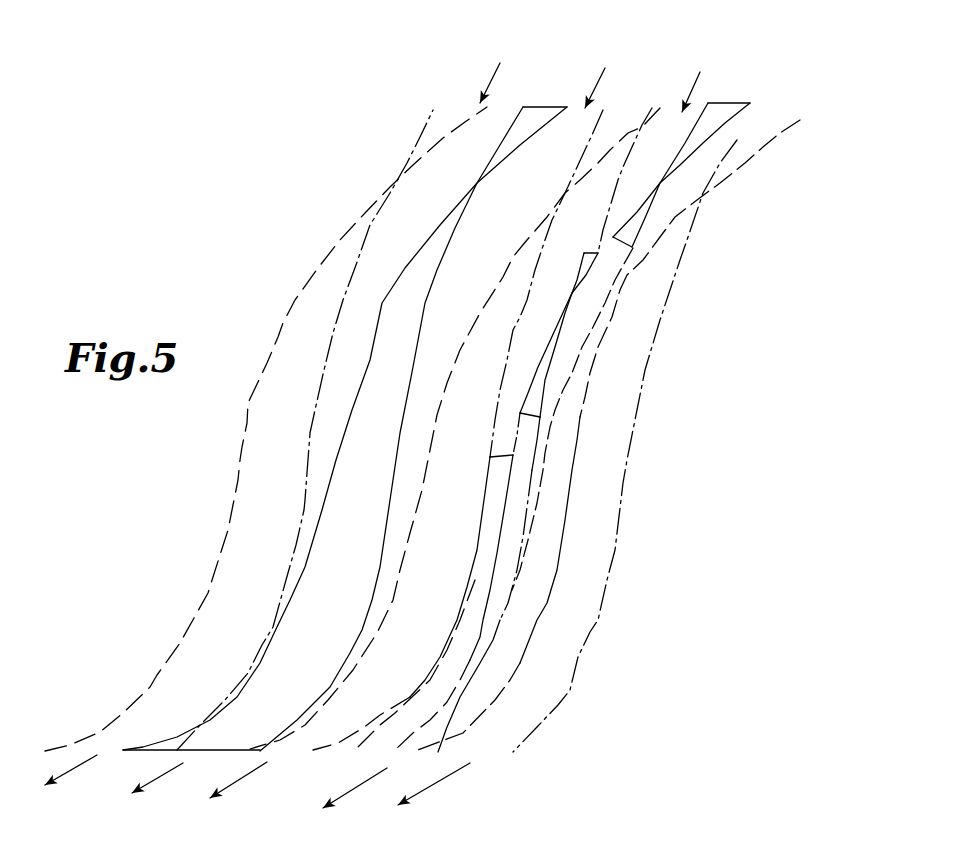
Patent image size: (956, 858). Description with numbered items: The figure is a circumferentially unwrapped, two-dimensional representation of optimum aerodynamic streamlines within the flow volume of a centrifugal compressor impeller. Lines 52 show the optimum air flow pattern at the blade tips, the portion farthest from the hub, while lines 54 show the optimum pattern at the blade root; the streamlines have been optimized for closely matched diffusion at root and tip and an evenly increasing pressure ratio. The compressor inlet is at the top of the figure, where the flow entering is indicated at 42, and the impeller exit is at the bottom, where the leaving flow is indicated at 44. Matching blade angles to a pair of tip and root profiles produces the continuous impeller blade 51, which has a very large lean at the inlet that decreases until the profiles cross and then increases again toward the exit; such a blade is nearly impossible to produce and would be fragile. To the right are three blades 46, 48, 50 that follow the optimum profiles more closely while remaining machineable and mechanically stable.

The inlet flow streamline (dash-dot) 42 is at (600, 82).
The outlet flow direction arrows 44 is at (364, 784).
The blade 46 is at (693, 140).
The blade 48 is at (540, 372).
The blade 50 is at (485, 530).
The continuous impeller blade 51 is at (360, 395).
The tip streamlines 52 is at (403, 165).
The root streamlines 54 is at (307, 280).